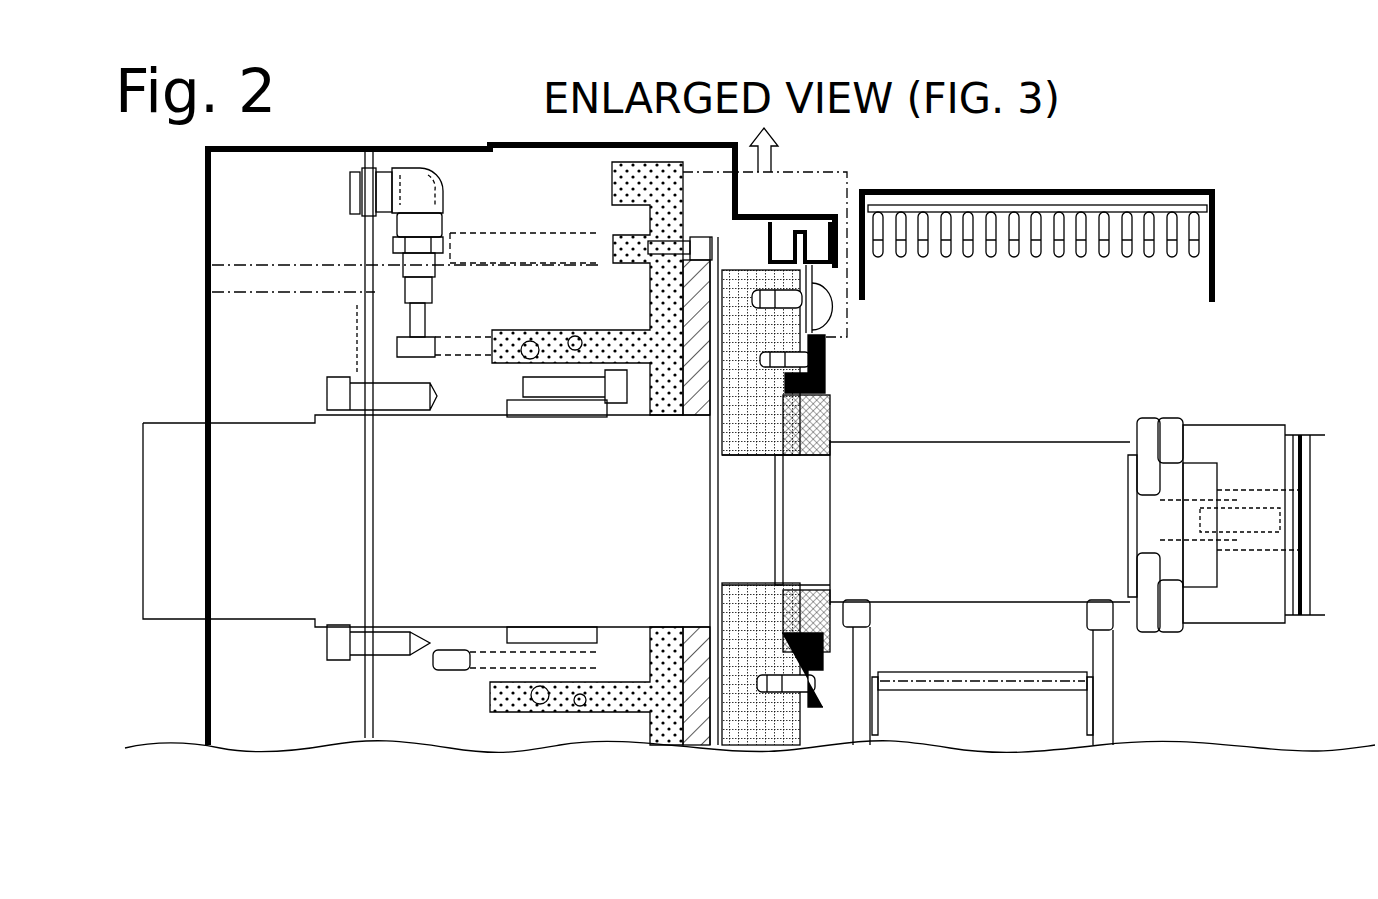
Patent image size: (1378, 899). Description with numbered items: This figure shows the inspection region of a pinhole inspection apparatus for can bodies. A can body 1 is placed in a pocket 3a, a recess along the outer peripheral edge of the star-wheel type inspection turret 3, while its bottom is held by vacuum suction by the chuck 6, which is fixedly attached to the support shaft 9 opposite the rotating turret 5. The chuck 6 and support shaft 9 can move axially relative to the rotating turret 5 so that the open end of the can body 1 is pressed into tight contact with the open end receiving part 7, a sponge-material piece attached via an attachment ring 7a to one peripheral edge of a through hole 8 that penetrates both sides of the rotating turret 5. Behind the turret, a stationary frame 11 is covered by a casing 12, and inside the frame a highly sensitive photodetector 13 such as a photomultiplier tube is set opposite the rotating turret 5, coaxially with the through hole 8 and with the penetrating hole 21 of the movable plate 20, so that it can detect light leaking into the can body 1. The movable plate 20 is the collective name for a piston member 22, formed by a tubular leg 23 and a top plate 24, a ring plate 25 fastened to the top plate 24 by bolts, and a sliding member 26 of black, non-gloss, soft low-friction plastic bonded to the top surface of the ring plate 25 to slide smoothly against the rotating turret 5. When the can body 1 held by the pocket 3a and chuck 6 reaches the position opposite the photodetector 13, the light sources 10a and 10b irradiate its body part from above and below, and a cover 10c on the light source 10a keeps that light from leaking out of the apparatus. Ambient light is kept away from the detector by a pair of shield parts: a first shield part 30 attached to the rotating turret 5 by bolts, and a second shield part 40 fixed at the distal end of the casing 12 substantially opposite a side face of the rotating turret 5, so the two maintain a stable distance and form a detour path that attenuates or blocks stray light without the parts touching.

The can body 1 is at (986, 533).
The inspection turret 3 is at (1100, 735).
The pocket 3a is at (1095, 615).
The rotating turret 5 is at (760, 735).
The chuck 6 is at (1233, 462).
The open end receiving part 7 is at (838, 425).
The attachment ring 7a is at (835, 372).
The through hole 8 is at (763, 507).
The support shaft 9 is at (1302, 470).
The light source 10a is at (1037, 204).
The light source 10b is at (982, 703).
The cover 10c is at (1210, 282).
The stationary frame 11 is at (455, 710).
The casing 12 is at (460, 146).
The photodetector 13 is at (493, 548).
The movable plate 20 is at (553, 450).
The penetrating hole 21 is at (698, 509).
The piston member 22 is at (600, 465).
The tubular leg 23 is at (553, 687).
The top plate 24 is at (647, 383).
The ring plate 25 is at (690, 630).
The sliding member 26 is at (693, 418).
The first shield part 30 is at (838, 275).
The second shield part 40 is at (790, 215).